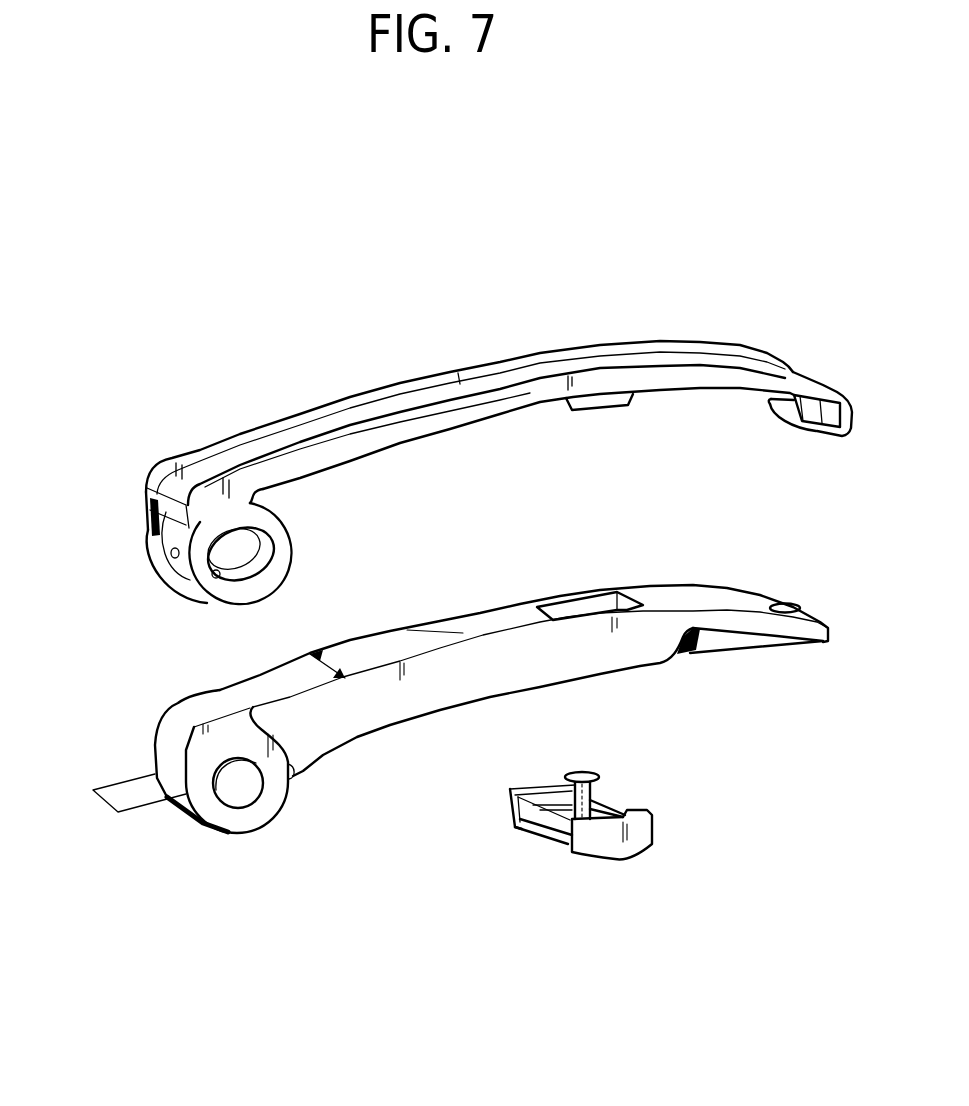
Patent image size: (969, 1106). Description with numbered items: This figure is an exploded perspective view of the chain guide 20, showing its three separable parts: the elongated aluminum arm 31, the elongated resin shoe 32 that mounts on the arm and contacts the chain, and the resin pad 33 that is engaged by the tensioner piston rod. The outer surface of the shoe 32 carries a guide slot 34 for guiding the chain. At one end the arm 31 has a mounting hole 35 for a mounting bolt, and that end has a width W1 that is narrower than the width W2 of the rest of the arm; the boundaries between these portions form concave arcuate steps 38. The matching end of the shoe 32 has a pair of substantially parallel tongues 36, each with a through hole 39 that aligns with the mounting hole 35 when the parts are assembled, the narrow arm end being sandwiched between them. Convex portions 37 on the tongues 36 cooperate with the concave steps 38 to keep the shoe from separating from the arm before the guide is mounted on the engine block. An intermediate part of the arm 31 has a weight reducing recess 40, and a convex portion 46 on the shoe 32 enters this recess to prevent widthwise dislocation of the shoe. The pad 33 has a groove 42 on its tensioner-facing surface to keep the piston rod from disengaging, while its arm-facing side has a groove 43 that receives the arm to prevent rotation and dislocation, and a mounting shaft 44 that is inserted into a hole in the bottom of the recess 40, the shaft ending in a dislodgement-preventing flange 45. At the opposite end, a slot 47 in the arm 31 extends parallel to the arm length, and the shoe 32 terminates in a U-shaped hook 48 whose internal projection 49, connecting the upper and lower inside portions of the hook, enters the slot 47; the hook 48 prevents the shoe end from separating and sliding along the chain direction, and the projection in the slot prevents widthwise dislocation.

The chain guide 20 is at (577, 303).
The arm 31 is at (433, 712).
The shoe 32 is at (433, 375).
The pad 33 is at (603, 860).
The guide slot 34 is at (353, 418).
The mounting hole 35 is at (228, 815).
The tongues 36 is at (146, 540).
The convex portions 37 is at (292, 543).
The steps 38 is at (219, 690).
The through holes 39 is at (173, 558).
The weight reducing recess 40 is at (593, 604).
The groove 42 is at (549, 838).
The groove 43 is at (534, 804).
The mounting shaft 44 is at (599, 807).
The dislodgement-preventing flange 45 is at (581, 774).
The convex portion 46 is at (600, 409).
The slot 47 is at (785, 603).
The U-shaped hook 48 is at (790, 418).
The projection 49 is at (812, 412).
The width of leftmost end of arm W1 is at (110, 790).
The width of other portion of arm W2 is at (336, 652).